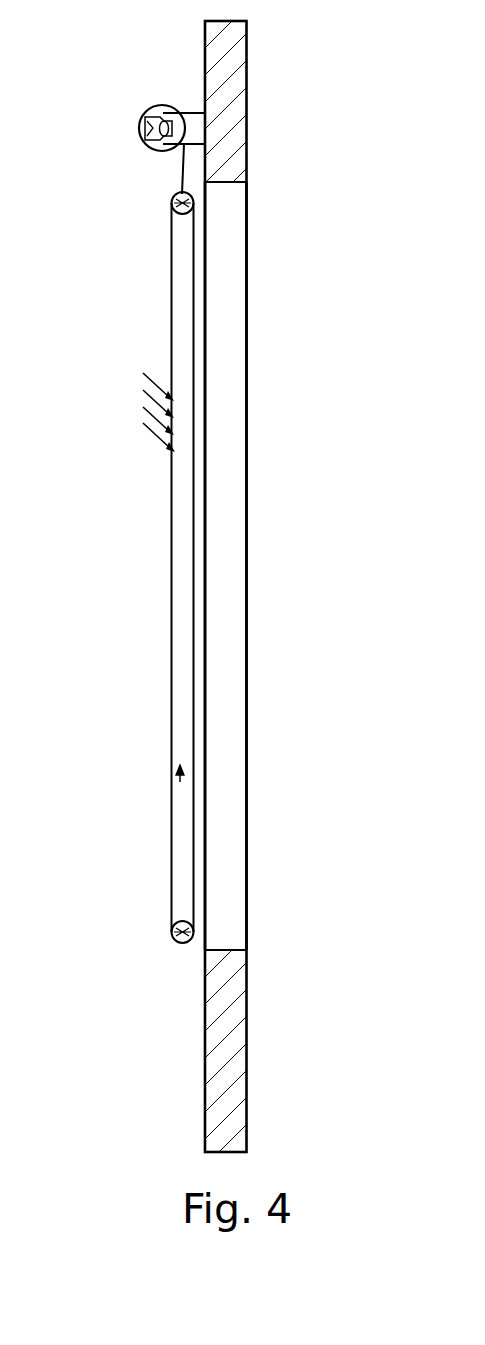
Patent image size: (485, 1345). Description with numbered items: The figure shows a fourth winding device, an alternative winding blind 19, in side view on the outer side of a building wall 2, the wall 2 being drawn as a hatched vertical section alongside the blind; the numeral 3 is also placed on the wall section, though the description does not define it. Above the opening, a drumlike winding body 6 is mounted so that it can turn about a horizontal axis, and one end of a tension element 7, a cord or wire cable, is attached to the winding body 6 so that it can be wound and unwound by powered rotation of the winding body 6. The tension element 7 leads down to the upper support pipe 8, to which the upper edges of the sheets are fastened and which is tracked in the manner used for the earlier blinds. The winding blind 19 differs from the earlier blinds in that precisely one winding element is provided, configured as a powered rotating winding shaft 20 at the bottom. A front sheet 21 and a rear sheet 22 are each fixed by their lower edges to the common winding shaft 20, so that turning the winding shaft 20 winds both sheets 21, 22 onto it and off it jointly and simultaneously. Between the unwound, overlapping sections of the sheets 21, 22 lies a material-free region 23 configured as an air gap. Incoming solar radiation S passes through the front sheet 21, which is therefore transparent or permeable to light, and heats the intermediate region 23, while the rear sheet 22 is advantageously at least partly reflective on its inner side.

The building wall 2 is at (232, 80).
The frame bar middle section 3 is at (220, 328).
The winding body 6 is at (172, 106).
The tension element 7 is at (177, 167).
The upper support pipe 8 is at (196, 203).
The winding blind 19 is at (131, 121).
The winding shaft 20 is at (182, 945).
The front sheet 21 is at (198, 607).
The rear sheet 22 is at (192, 520).
The material-free region 23 is at (172, 790).
The solar radiation S is at (147, 412).